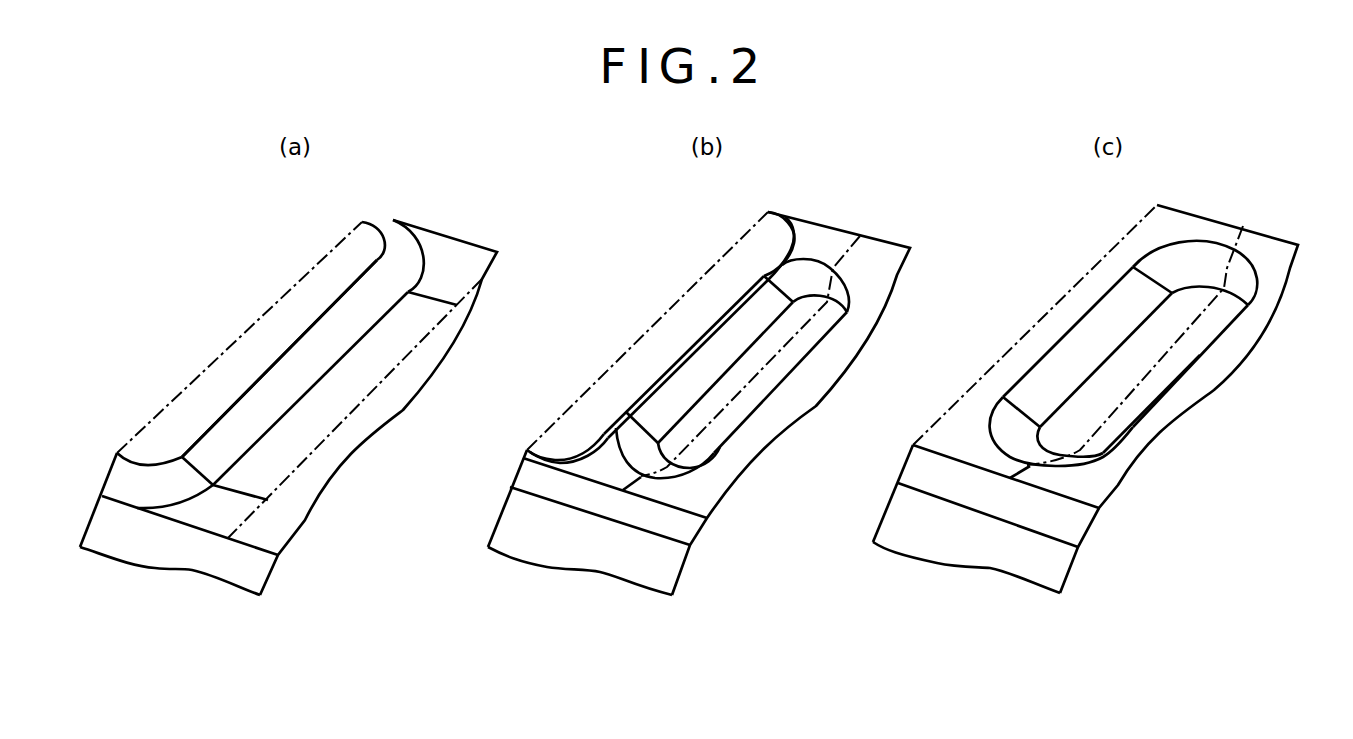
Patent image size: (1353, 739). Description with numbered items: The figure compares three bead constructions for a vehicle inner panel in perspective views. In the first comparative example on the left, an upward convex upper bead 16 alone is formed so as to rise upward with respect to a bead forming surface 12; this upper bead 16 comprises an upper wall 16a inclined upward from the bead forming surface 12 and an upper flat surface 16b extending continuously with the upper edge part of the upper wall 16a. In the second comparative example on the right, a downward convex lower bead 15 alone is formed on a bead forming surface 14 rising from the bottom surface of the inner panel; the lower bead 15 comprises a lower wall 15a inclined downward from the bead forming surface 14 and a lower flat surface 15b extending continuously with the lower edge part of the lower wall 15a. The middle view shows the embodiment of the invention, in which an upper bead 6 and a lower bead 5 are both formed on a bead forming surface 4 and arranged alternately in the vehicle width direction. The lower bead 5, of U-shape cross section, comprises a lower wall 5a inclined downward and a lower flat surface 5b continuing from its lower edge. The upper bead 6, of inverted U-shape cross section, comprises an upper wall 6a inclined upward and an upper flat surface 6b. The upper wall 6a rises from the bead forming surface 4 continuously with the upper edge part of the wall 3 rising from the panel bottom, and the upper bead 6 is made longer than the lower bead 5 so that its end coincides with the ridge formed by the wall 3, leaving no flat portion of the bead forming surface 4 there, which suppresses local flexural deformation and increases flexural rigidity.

The wall 3 is at (211, 550).
The bead forming surface 4 is at (602, 470).
The lower bead 5 is at (738, 412).
The lower wall 5a is at (665, 412).
The lower flat surface 5b is at (768, 383).
The upper bead 6 is at (613, 353).
The upper wall 6a is at (565, 460).
The upper flat surface 6b is at (687, 316).
The bead forming surface 12 is at (297, 438).
The bead forming surface 14 is at (952, 443).
The lower bead 15 is at (1233, 330).
The lower wall 15a is at (1063, 383).
The lower flat surface 15b is at (1177, 370).
The upper bead 16 is at (236, 322).
The upper wall 16a is at (223, 447).
The upper flat surface 16b is at (205, 400).